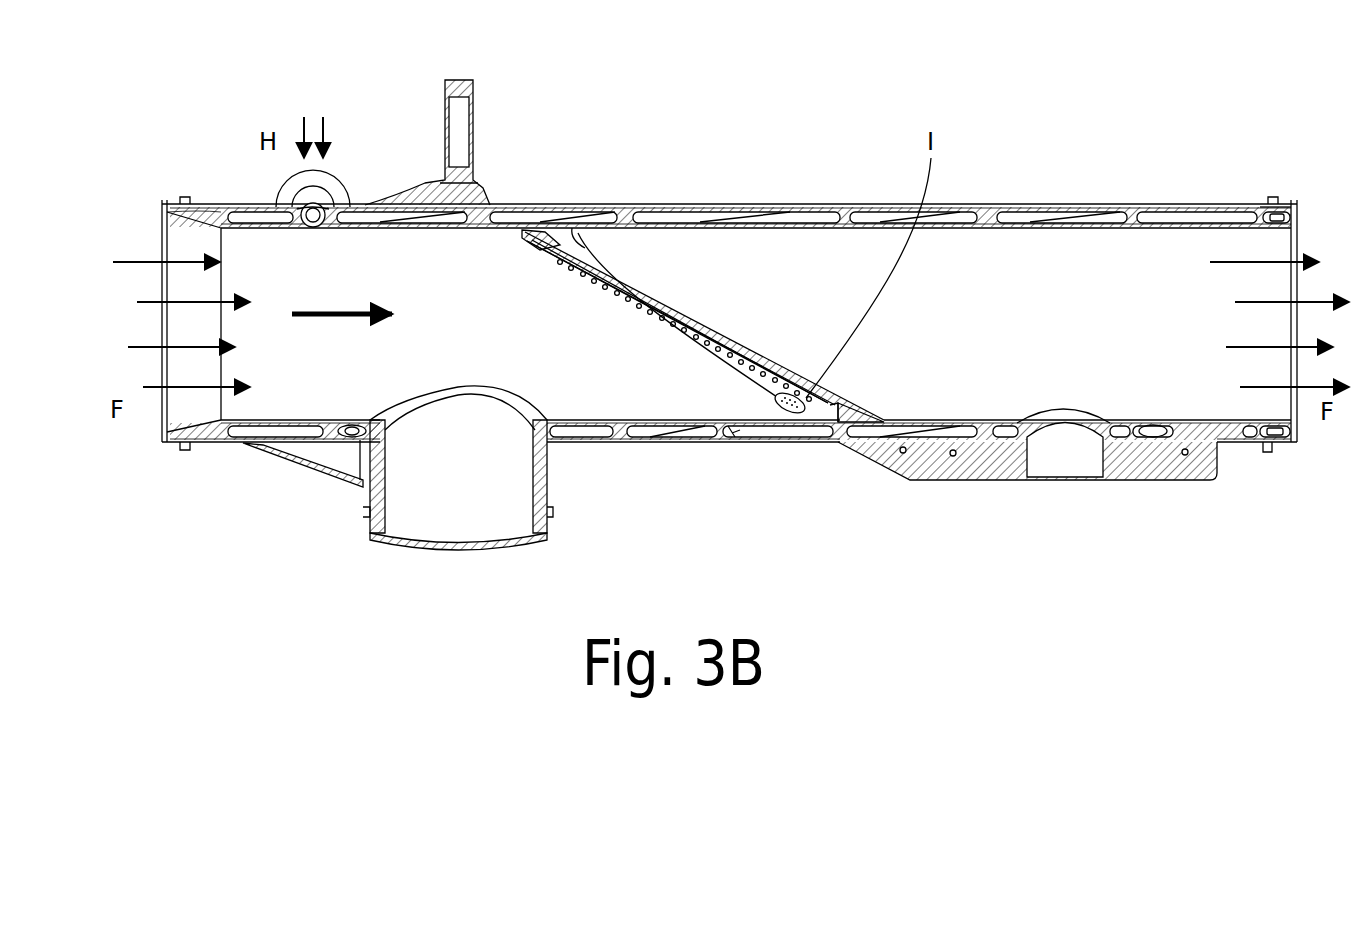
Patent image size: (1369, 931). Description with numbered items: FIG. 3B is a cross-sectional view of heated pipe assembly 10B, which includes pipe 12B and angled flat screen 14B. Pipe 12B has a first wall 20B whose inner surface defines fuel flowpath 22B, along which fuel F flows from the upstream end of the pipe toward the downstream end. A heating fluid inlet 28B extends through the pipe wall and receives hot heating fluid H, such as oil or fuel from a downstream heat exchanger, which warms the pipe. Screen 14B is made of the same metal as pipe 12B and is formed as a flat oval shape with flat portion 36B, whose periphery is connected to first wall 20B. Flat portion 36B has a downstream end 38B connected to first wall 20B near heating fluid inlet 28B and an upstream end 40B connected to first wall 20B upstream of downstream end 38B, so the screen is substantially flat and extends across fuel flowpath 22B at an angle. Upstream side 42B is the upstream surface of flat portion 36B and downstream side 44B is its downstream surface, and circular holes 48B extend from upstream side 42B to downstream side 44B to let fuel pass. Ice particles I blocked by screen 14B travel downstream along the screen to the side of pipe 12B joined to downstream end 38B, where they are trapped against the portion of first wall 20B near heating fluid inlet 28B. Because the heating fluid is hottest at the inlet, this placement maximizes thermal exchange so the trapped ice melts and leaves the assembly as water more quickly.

The heated pipe assembly 10B is at (291, 104).
The pipe 12B is at (583, 475).
The angled flat screen 14B is at (711, 386).
The first wall 20B is at (796, 205).
The fuel flowpath 22B is at (342, 298).
The heating fluid inlet 28B is at (336, 205).
The flat portion 36B is at (616, 258).
The downstream end 38B is at (840, 414).
The upstream end 40B is at (525, 230).
The upstream side 42B is at (577, 277).
The downstream side 44B is at (693, 310).
The holes 48B is at (690, 305).